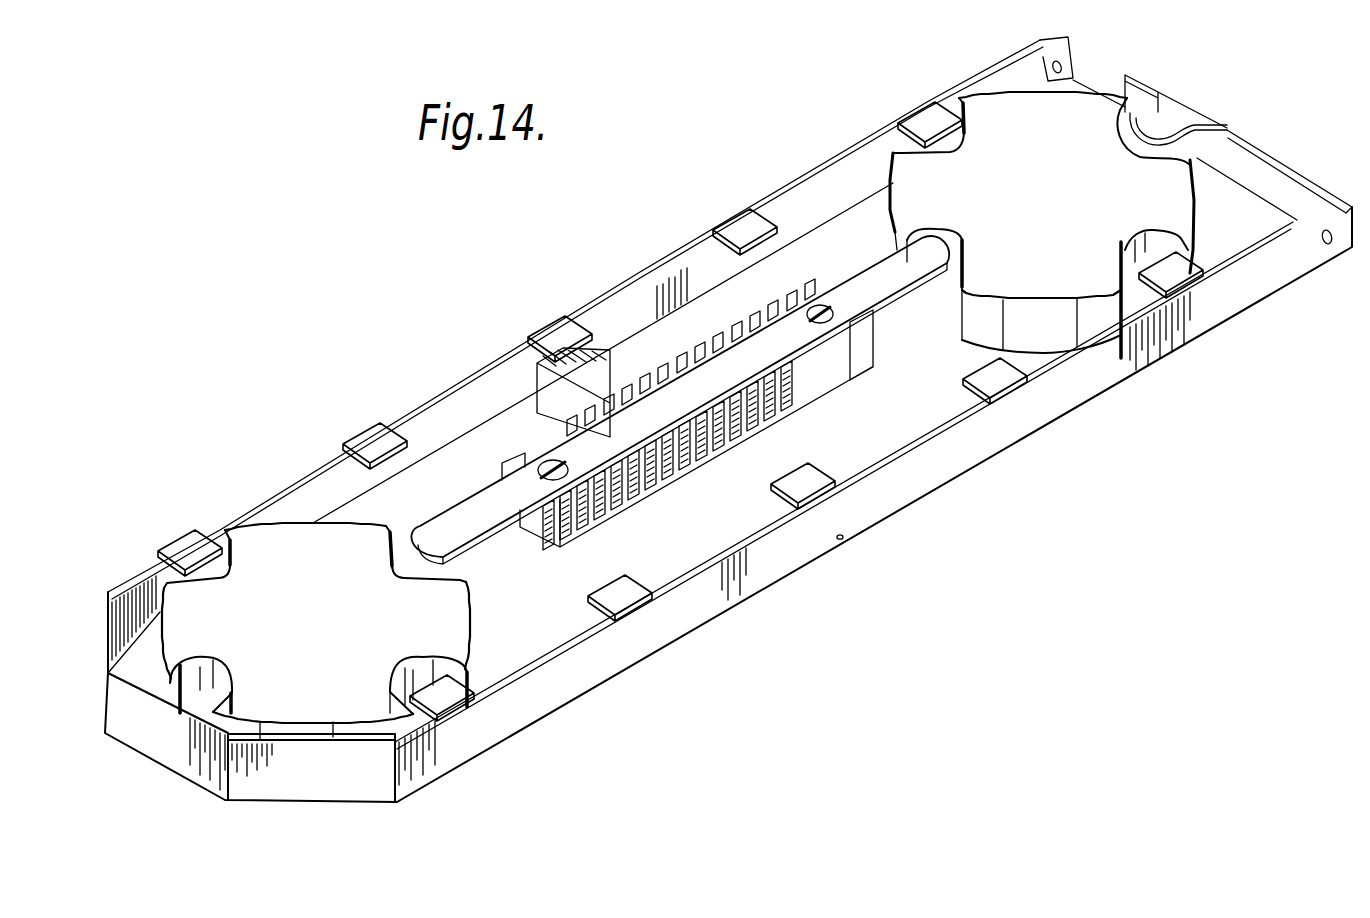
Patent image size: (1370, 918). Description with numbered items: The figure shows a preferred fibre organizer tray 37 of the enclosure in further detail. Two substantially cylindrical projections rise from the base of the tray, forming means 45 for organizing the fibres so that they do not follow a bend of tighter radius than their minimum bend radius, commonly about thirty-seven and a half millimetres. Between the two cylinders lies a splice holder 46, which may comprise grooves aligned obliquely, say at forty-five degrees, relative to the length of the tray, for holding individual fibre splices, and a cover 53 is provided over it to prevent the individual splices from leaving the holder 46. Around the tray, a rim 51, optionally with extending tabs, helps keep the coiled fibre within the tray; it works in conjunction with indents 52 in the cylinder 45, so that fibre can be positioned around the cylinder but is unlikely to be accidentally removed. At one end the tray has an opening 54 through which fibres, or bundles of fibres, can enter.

The tray 37 is at (363, 378).
The means for organizing fibres 45 is at (282, 527).
The means for holding individual fibre splices 46 is at (700, 335).
The rim means 51 is at (633, 597).
The indents 52 is at (492, 702).
The cover 53 is at (587, 437).
The opening 54 is at (1092, 78).